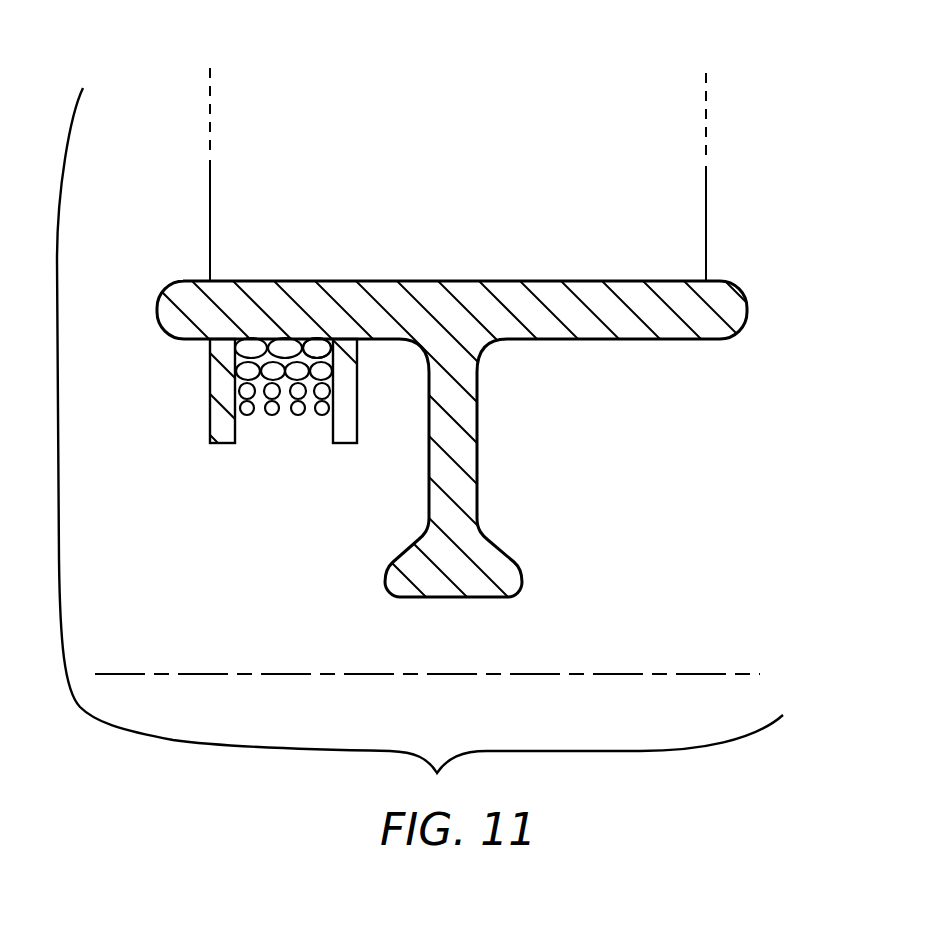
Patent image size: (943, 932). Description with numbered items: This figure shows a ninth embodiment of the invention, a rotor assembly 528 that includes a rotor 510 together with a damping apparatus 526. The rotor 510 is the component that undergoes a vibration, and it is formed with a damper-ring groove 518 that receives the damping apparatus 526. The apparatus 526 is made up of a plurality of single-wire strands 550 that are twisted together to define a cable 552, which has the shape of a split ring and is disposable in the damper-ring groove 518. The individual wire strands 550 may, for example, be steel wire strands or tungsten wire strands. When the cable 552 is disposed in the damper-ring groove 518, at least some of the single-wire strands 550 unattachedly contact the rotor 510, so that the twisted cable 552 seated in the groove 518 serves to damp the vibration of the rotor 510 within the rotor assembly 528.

The rotor 510 is at (716, 284).
The damper-ring groove 518 is at (320, 345).
The apparatus 526 is at (307, 430).
The rotor assembly 528 is at (727, 114).
The single-wire strands 550 is at (249, 346).
The cable 552 is at (268, 416).